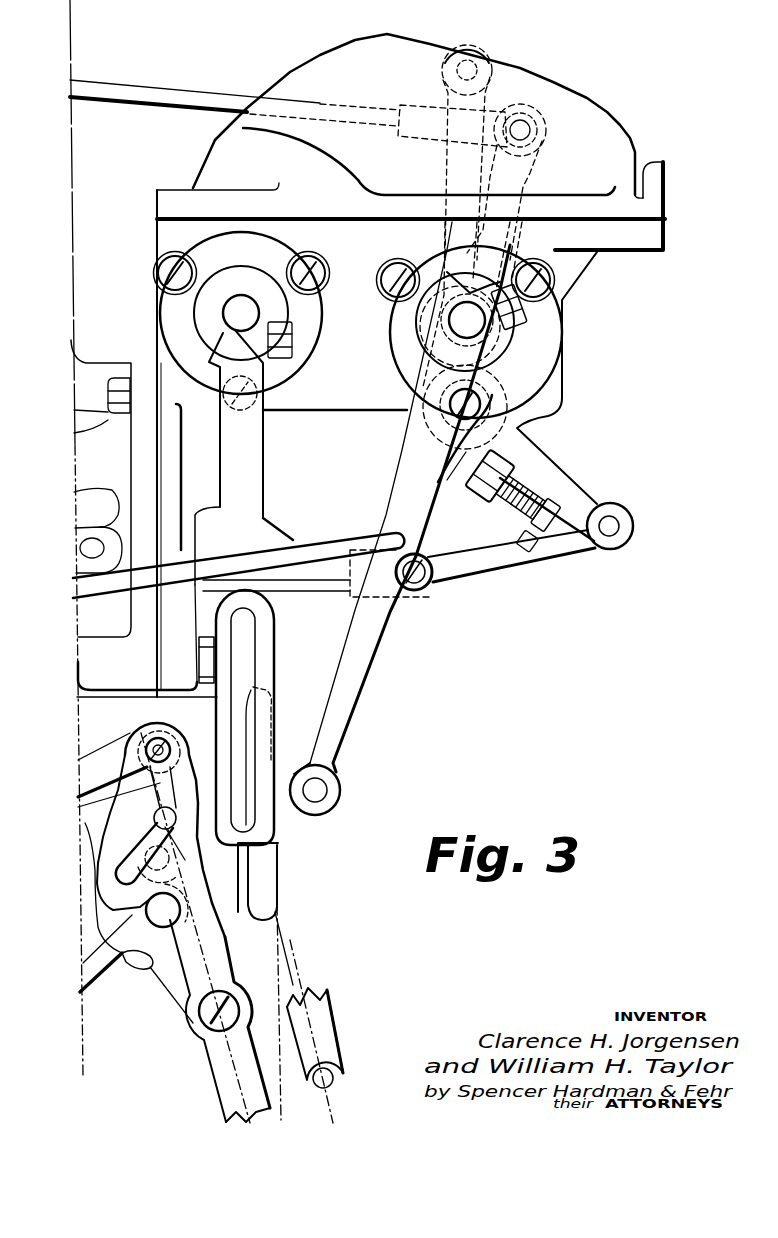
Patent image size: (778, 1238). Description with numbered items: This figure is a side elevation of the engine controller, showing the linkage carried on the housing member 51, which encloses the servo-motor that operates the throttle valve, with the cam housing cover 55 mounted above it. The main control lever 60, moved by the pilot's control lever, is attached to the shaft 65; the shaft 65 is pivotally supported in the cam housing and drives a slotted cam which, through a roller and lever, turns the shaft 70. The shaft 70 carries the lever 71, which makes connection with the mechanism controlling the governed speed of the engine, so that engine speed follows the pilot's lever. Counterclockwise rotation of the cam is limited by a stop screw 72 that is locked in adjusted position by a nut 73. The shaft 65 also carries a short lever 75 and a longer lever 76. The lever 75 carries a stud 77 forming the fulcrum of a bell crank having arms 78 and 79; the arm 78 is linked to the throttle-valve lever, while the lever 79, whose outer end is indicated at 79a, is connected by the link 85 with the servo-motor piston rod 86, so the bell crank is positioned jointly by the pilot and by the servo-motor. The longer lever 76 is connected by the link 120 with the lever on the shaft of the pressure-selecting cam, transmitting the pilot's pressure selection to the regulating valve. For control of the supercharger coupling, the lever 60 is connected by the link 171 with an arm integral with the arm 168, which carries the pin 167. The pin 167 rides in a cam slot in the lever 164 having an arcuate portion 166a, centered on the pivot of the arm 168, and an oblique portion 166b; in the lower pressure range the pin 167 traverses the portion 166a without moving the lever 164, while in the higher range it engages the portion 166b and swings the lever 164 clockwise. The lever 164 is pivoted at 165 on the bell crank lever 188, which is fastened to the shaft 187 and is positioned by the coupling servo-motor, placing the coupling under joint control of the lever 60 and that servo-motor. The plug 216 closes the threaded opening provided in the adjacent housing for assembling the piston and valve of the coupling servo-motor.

The link 120 is at (203, 96).
The cam housing cover 55 is at (633, 143).
The arm 78 is at (474, 50).
The longer lever 76 is at (528, 166).
The housing member 51 is at (86, 358).
The shaft 70 is at (240, 313).
The lever 71 is at (252, 457).
The shaft 65 is at (466, 320).
The short lever 75 is at (432, 365).
The stud 77 is at (450, 420).
The lever 79 is at (572, 462).
The pivot pin 79a is at (632, 525).
The nut 73 is at (476, 494).
The stop screw 72 is at (520, 532).
The link 85 is at (494, 558).
The main control lever 60 is at (380, 655).
The link 171 is at (322, 545).
The servo-motor piston rod 86 is at (293, 588).
The plug 216 is at (273, 878).
The pin 167 is at (148, 742).
The arm 168 is at (78, 764).
The arcuate cam slot portion 166a is at (150, 802).
The oblique cam slot portion 166b is at (120, 866).
The shaft 187 is at (146, 910).
The lever 164 is at (193, 1023).
The pivot 165 is at (198, 1062).
The bell crank lever 188 is at (150, 990).